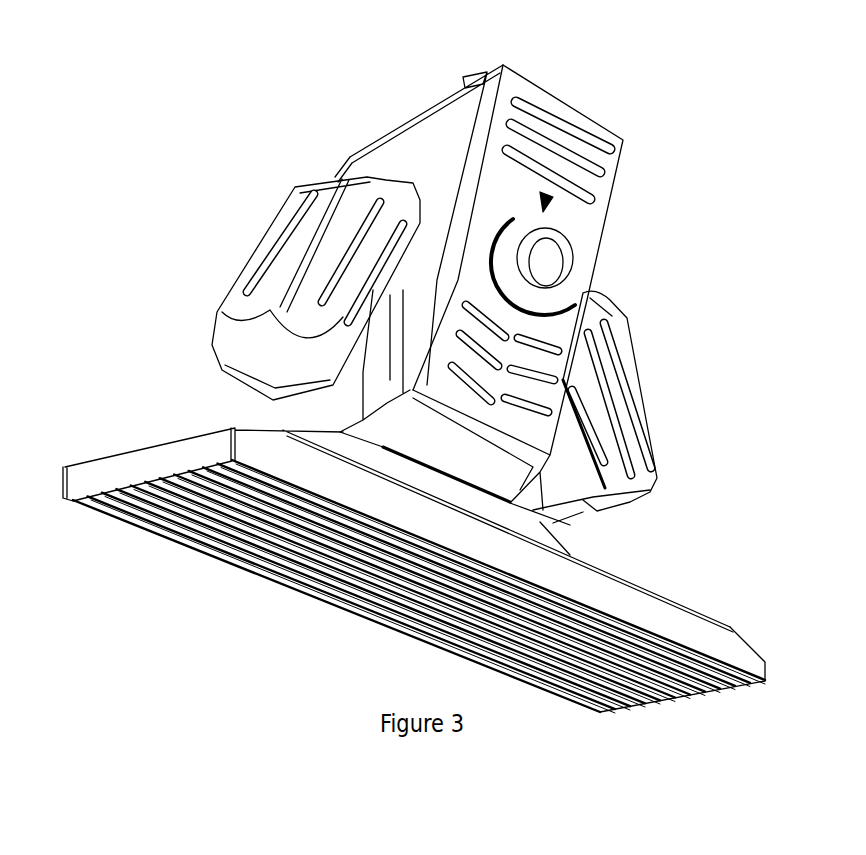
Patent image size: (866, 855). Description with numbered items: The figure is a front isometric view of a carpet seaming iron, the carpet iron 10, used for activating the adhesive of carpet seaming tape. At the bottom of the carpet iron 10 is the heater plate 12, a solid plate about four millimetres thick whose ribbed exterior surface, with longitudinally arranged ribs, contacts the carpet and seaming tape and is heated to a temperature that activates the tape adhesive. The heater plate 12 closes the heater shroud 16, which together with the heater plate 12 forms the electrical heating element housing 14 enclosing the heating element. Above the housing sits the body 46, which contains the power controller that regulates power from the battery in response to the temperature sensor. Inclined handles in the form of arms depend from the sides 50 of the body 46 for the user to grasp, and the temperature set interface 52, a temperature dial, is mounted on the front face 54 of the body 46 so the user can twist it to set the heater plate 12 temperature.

The carpet iron 10 is at (685, 74).
The heater plate 12 is at (332, 590).
The electrical heating element housing 14 is at (725, 575).
The heater shroud 16 is at (767, 667).
The body 46 is at (622, 140).
The sides of body 50 is at (466, 164).
The temperature set interface 52 is at (558, 275).
The front face of body 54 is at (517, 211).